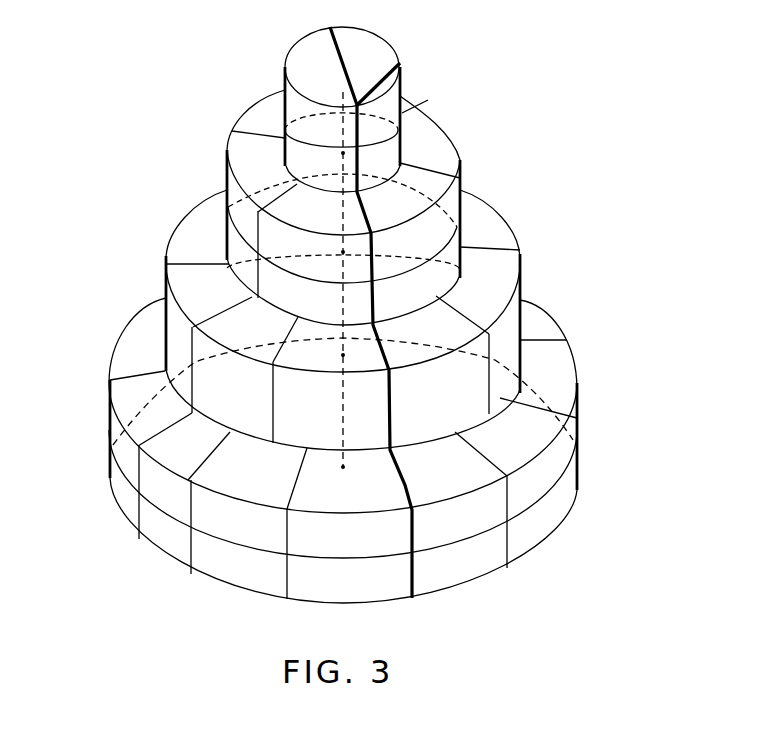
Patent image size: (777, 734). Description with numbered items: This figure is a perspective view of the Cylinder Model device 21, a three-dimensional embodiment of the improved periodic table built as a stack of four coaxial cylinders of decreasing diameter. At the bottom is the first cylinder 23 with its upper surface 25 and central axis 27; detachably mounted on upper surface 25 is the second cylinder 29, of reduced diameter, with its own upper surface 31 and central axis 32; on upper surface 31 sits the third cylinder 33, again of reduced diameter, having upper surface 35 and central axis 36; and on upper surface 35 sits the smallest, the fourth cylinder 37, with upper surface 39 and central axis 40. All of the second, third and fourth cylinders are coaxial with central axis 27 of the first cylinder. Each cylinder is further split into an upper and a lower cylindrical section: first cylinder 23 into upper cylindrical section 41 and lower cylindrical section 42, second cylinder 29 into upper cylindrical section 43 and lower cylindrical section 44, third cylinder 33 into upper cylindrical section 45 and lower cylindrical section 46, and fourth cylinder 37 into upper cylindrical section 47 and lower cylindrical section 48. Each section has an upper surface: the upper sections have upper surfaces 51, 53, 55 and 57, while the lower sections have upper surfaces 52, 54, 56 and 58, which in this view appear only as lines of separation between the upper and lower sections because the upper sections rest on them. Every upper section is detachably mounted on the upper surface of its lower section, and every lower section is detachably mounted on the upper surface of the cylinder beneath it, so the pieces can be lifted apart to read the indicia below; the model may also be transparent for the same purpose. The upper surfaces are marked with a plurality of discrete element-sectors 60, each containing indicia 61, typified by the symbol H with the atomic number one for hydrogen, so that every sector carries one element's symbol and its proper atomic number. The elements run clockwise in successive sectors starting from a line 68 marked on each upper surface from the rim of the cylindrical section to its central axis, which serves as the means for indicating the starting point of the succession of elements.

The Cylinder Model device 21 is at (482, 583).
The first cylinder 23 is at (107, 413).
The upper surface of first cylinder 25 is at (118, 382).
The central axis of first cylinder 27 is at (343, 427).
The second cylinder 29 is at (164, 307).
The upper surface of second cylinder 31 is at (177, 270).
The central axis of second cylinder 32 is at (340, 308).
The third cylinder 33 is at (226, 180).
The upper surface of third cylinder 35 is at (226, 129).
The central axis of third cylinder 36 is at (333, 218).
The fourth cylinder 37 is at (283, 88).
The upper surface of fourth cylinder 39 is at (288, 58).
The central axis of fourth cylinder 40 is at (343, 88).
The upper cylindrical section of first cylinder 41 is at (579, 422).
The lower cylindrical section of first cylinder 42 is at (578, 470).
The upper cylindrical section of second cylinder 43 is at (520, 303).
The lower cylindrical section of second cylinder 44 is at (520, 357).
The upper cylindrical section of third cylinder 45 is at (463, 192).
The lower cylindrical section of third cylinder 46 is at (470, 246).
The upper cylindrical section of fourth cylinder 47 is at (400, 83).
The lower cylindrical section of fourth cylinder 48 is at (402, 128).
The upper surface of upper cylindrical section 41 51 is at (578, 381).
The upper surface of lower cylindrical section 42 52 is at (579, 438).
The upper surface of upper cylindrical section 43 53 is at (518, 257).
The upper surface of lower cylindrical section 44 54 is at (523, 332).
The upper surface of upper cylindrical section 45 55 is at (460, 161).
The upper surface of lower cylindrical section 46 56 is at (225, 200).
The upper surface of upper cylindrical section 47 57 is at (362, 37).
The upper surface of lower cylindrical section 48 58 is at (402, 125).
The element-sectors 60 is at (322, 47).
The indicia 61 is at (310, 55).
The line 68 is at (400, 63).